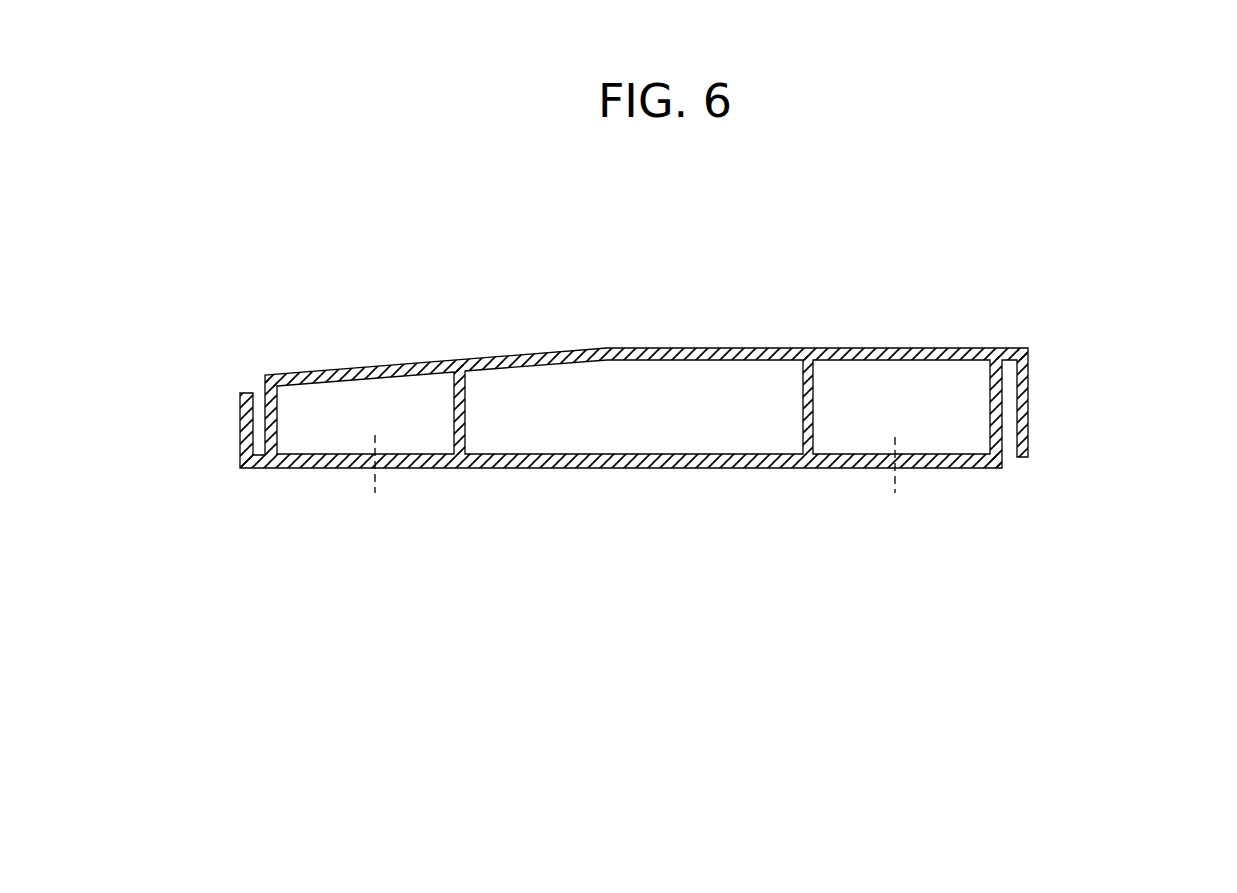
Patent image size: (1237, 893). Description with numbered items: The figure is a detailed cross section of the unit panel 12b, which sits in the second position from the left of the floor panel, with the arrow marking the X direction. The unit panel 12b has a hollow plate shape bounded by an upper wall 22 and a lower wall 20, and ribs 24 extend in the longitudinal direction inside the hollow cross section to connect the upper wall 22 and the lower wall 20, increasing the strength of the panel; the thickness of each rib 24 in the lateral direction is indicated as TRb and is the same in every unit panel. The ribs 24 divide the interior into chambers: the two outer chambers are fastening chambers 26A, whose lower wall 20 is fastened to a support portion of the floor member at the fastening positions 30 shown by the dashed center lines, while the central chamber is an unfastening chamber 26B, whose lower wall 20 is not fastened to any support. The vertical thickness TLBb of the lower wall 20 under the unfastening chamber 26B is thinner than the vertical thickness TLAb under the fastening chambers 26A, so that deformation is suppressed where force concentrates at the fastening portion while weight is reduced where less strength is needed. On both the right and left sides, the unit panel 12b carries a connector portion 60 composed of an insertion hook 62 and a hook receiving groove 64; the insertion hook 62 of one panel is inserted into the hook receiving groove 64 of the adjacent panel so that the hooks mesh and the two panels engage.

The unit panel 12b is at (352, 322).
The lower wall 20 is at (688, 470).
The upper wall 22 is at (610, 347).
The rib 24 is at (453, 403).
The fastening chamber 26A is at (333, 412).
The unfastening chamber 26B is at (643, 408).
The fastening position 30 is at (634, 481).
The connector portion 60 is at (257, 368).
The insertion hook 62 is at (240, 433).
The hook receiving groove 64 is at (262, 413).
The rib thickness TRb is at (777, 412).
The vertical thickness of lower wall of unfastening chamber TLBb is at (493, 433).
The vertical thickness of lower wall of fastening chamber TLAb is at (942, 428).
The X direction X is at (1143, 495).